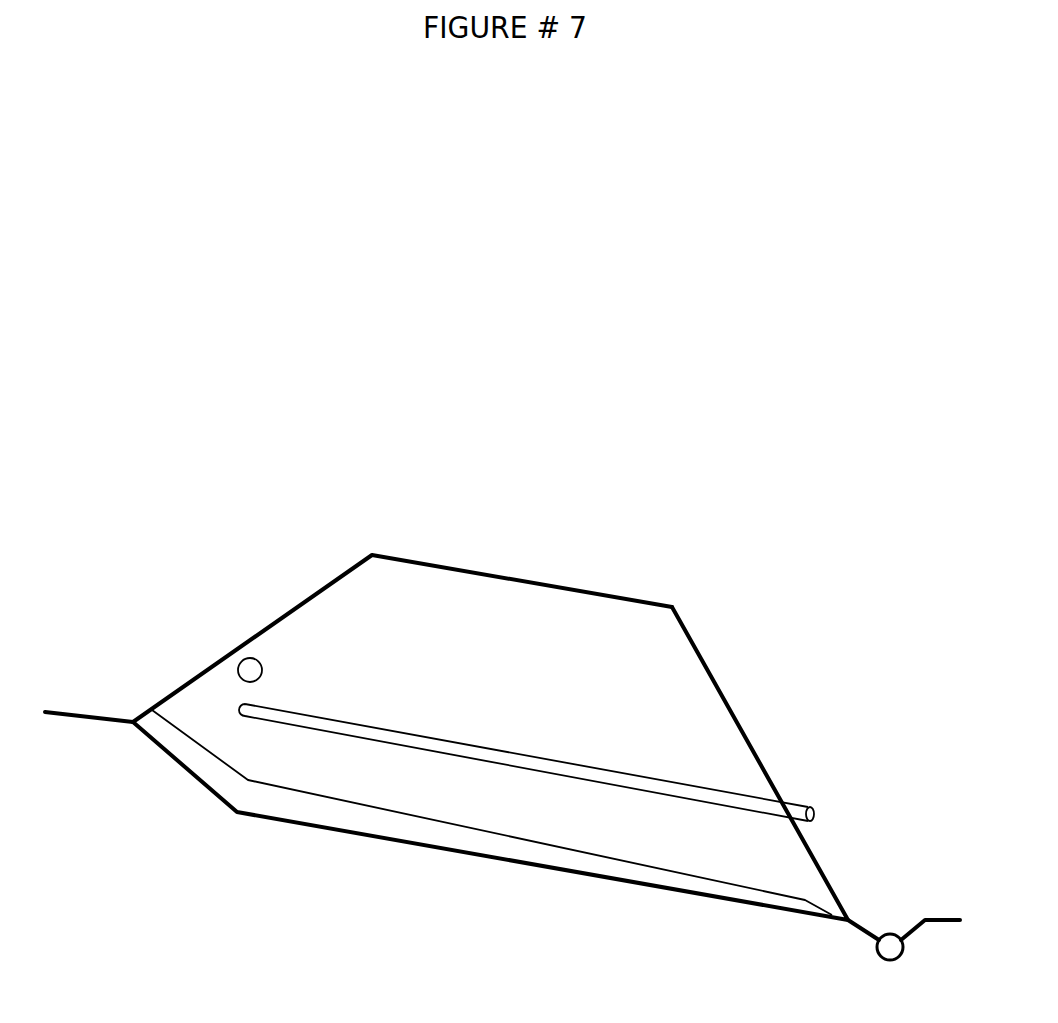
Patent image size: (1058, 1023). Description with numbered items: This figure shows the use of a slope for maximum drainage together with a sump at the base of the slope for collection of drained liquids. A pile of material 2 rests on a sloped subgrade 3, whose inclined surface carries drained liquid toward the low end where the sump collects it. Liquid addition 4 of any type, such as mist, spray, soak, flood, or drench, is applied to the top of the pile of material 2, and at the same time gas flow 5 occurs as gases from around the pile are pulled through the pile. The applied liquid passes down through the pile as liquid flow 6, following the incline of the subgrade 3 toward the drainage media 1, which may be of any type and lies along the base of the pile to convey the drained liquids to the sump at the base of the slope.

The drainage media 1 is at (278, 807).
The pile of material 2 is at (490, 757).
The subgrade 3 is at (502, 838).
The liquid addition 4 is at (275, 605).
The gas flow 5 is at (250, 668).
The liquid flow 6 is at (437, 735).